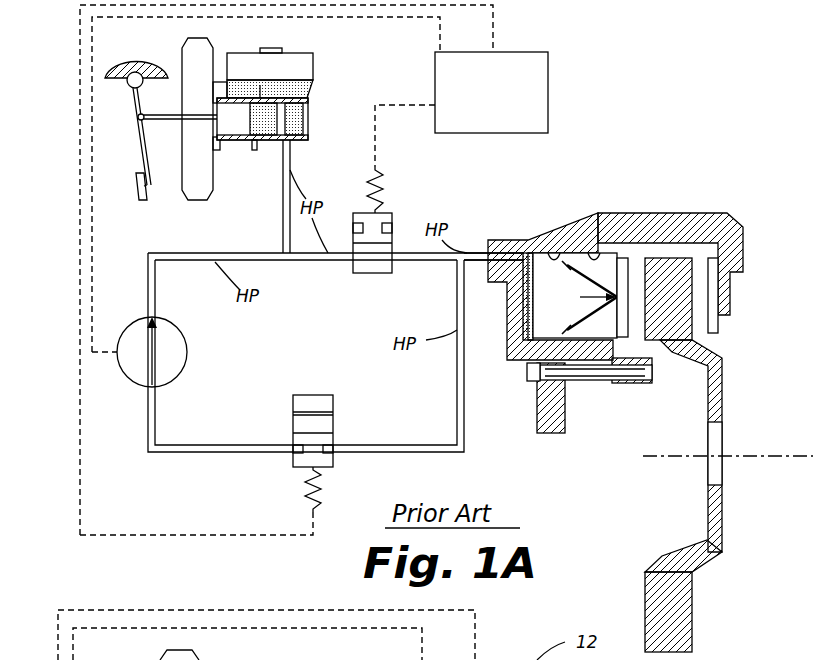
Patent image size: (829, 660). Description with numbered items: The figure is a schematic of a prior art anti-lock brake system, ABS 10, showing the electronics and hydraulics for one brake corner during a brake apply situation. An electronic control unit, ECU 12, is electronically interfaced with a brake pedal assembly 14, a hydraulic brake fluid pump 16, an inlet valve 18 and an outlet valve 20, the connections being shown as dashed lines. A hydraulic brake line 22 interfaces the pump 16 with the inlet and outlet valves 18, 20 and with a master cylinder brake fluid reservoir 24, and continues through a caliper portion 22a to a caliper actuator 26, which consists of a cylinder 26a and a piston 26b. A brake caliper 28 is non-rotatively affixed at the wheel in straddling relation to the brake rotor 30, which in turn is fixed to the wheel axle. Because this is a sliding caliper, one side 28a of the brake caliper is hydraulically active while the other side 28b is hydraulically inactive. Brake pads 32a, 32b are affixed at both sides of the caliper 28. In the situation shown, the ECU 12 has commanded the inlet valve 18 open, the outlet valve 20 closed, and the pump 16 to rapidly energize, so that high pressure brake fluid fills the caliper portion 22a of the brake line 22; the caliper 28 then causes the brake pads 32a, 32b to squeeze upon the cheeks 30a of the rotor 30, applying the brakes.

The ABS 10 is at (707, 110).
The electronic control unit (ECU) 12 is at (548, 52).
The brake pedal assembly 14 is at (120, 144).
The hydraulic brake fluid pump 16 is at (187, 343).
The inlet valve 18 is at (393, 238).
The outlet valve 20 is at (335, 410).
The hydraulic brake line 22 is at (283, 203).
The caliper portion 22a is at (474, 250).
The master cylinder brake fluid reservoir 24 is at (317, 80).
The caliper actuator 26 is at (555, 295).
The cylinder 26a is at (567, 252).
The piston 26b is at (592, 250).
The brake caliper 28 is at (648, 291).
The hydraulically active side 28a is at (536, 240).
The hydraulically inactive side 28b is at (737, 219).
The brake rotor 30 is at (726, 455).
The cheeks 30a is at (640, 277).
The brake pad 32a is at (636, 340).
The brake pad 32b is at (710, 337).